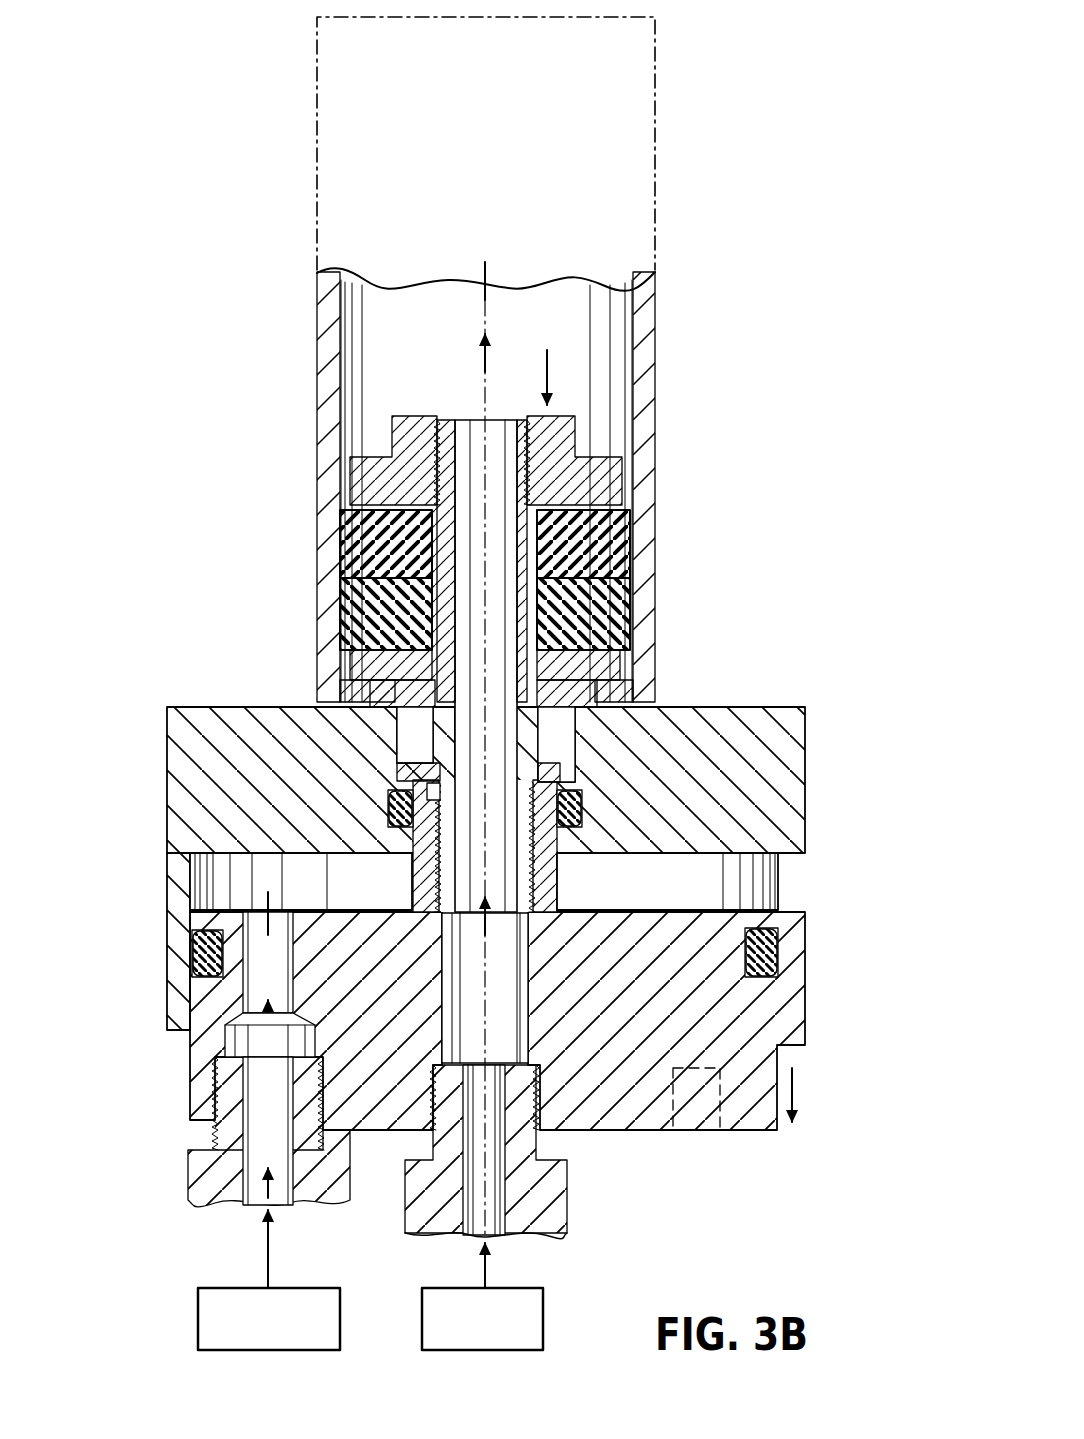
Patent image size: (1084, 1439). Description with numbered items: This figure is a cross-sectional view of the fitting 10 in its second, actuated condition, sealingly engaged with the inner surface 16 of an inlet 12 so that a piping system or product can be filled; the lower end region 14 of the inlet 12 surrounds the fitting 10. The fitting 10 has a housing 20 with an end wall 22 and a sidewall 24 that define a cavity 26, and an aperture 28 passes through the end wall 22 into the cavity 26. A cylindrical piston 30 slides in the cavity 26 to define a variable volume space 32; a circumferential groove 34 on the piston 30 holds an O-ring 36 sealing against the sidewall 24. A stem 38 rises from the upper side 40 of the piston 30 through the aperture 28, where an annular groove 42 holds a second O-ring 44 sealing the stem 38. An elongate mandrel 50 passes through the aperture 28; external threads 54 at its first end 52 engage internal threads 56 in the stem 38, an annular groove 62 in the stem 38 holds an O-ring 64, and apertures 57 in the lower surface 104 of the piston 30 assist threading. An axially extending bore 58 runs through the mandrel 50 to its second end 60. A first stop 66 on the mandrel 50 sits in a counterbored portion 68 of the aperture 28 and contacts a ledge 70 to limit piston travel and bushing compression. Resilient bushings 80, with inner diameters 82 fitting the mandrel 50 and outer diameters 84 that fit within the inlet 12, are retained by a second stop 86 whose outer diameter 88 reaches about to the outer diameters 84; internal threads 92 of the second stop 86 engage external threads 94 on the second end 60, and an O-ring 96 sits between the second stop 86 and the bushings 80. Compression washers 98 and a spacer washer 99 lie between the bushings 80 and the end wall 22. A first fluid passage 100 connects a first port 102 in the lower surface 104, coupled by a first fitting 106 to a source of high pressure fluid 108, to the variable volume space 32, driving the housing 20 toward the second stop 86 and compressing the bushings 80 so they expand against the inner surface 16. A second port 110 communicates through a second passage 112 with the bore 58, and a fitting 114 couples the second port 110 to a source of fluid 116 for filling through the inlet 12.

The fitting 10 is at (880, 352).
The inlet 12 is at (657, 190).
The cylinder lower end 14 is at (655, 694).
The inner surface 16 is at (628, 312).
The housing 20 is at (805, 708).
The end wall 22 is at (176, 707).
The sidewall 24 is at (795, 982).
The cavity 26 is at (778, 893).
The aperture 28 is at (554, 855).
The piston 30 is at (738, 1132).
The variable volume space 32 is at (673, 876).
The circumferential groove 34 is at (178, 985).
The O-ring 36 is at (195, 952).
The stem 38 is at (412, 834).
The upper side 40 is at (195, 884).
The annular groove 42 is at (585, 822).
The second O-ring 44 is at (584, 801).
The mandrel 50 is at (468, 412).
The first end 52 is at (490, 912).
The external threads 54 is at (425, 916).
The internal threads 56 is at (442, 878).
The apertures 57 is at (703, 1132).
The axially extending bore 58 is at (470, 505).
The second end 60 is at (420, 418).
The annular groove 62 is at (392, 801).
The O-ring 64 is at (570, 760).
The first stop 66 is at (398, 768).
The counterbored portion 68 is at (400, 730).
The ledge 70 is at (556, 780).
The resilient bushings 80 is at (345, 541).
The inner diameters 82 is at (440, 606).
The outer diameters 84 is at (632, 605).
The second stop 86 is at (392, 442).
The outer diameter 88 is at (622, 490).
The internal threads 92 is at (576, 432).
The external threads 94 is at (509, 420).
The O-ring 96 is at (632, 545).
The compression washers 98 is at (345, 667).
The spacer washer 99 is at (630, 690).
The first fluid passage 100 is at (262, 995).
The first port 102 is at (212, 1090).
The lower surface 104 is at (372, 1136).
The first fitting 106 is at (190, 1174).
The source of high pressure fluid 108 is at (198, 1318).
The second port 110 is at (540, 1112).
The second passage 112 is at (512, 1024).
The fitting 114 is at (567, 1208).
The source of fluid 116 is at (543, 1318).